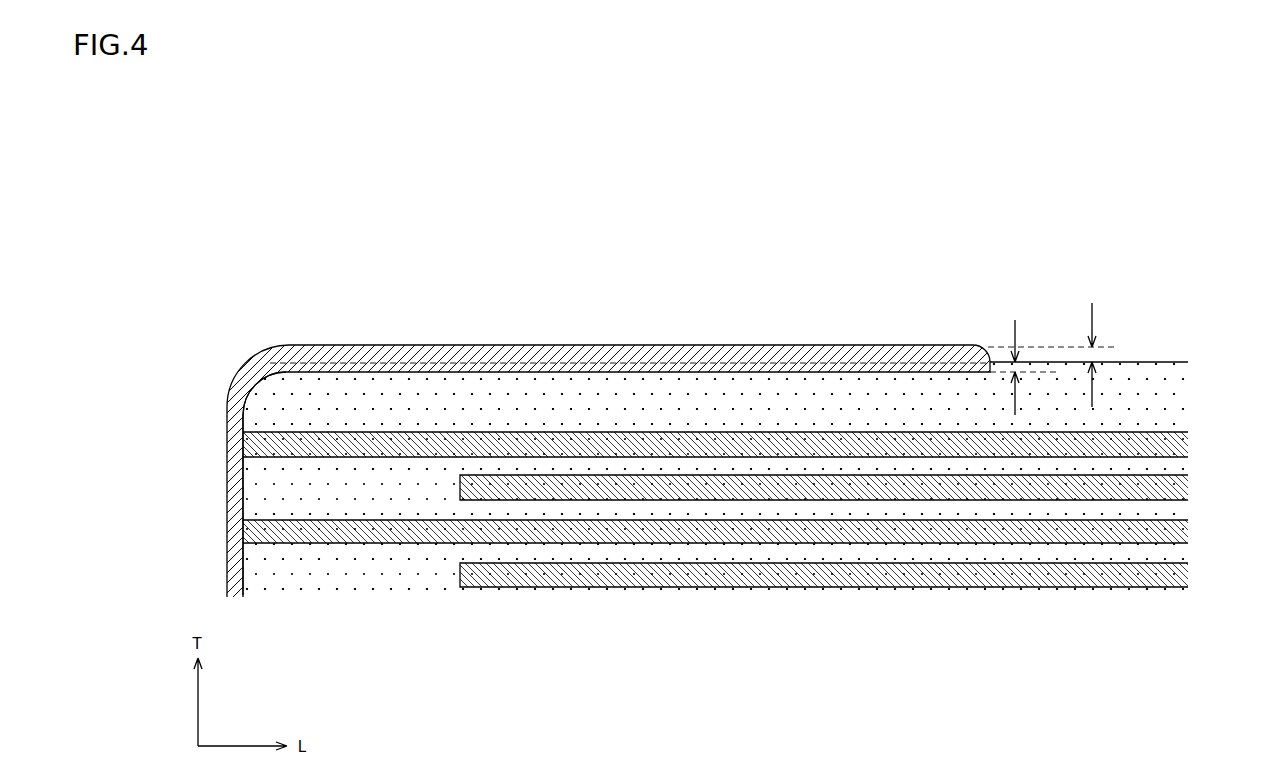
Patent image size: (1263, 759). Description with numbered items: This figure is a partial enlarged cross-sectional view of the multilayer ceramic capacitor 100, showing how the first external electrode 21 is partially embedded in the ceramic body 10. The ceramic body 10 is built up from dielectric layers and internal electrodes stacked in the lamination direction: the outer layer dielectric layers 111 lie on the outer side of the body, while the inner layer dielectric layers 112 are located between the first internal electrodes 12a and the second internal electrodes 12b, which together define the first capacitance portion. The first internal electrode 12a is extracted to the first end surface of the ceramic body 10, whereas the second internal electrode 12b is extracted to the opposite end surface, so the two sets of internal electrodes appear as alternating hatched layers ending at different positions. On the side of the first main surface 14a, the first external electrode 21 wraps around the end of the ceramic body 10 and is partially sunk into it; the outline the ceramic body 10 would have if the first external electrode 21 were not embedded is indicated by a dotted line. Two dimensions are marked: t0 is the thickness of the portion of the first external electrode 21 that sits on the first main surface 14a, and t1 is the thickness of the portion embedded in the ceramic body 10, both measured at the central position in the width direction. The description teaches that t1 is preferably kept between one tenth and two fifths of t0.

The multilayer ceramic capacitor 100 is at (690, 298).
The ceramic body 10 is at (1157, 362).
The first main surface 14a is at (1173, 360).
The outer layer dielectric layers 111 is at (533, 398).
The inner layer dielectric layers 112 is at (618, 505).
The first internal electrode 12a is at (380, 520).
The second internal electrode 12b is at (845, 565).
The first external electrode 21 is at (420, 345).
The thickness of the embedded portion of the first external electrode t1 is at (1007, 360).
The thickness of the portion of the first external electrode on the first main surfa t0 is at (1093, 355).